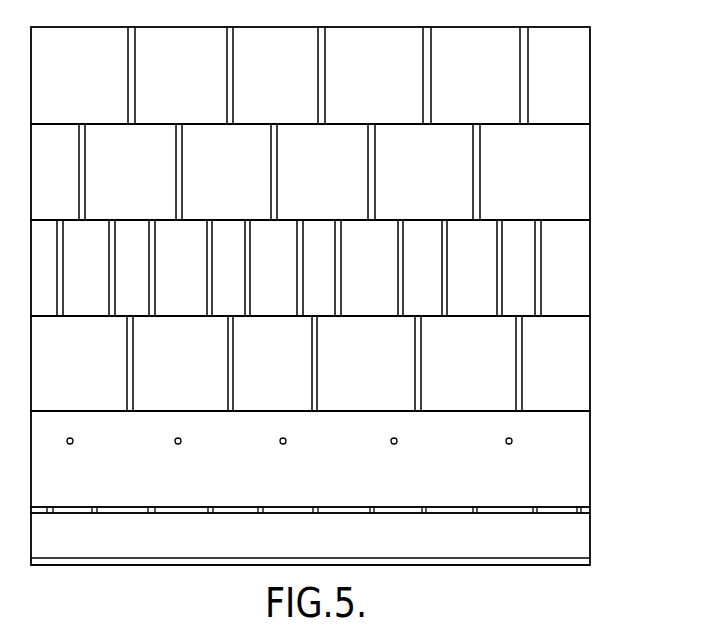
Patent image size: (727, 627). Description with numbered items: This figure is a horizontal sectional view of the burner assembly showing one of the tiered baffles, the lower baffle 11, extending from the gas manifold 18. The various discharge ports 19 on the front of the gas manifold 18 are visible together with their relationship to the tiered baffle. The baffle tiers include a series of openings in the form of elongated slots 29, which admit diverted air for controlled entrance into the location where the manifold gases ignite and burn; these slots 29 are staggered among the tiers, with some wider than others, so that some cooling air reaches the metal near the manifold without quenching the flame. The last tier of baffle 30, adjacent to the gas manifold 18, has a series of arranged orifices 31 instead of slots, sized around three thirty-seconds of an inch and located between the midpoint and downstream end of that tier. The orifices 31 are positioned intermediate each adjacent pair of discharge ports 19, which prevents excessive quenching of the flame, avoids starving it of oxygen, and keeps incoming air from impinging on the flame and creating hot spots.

The lower baffle 11 is at (590, 276).
The gas manifold 18 is at (592, 541).
The discharge ports 19 is at (158, 507).
The elongated slots 29 is at (327, 93).
The last tier of baffle 30 is at (560, 482).
The orifices 31 is at (394, 447).